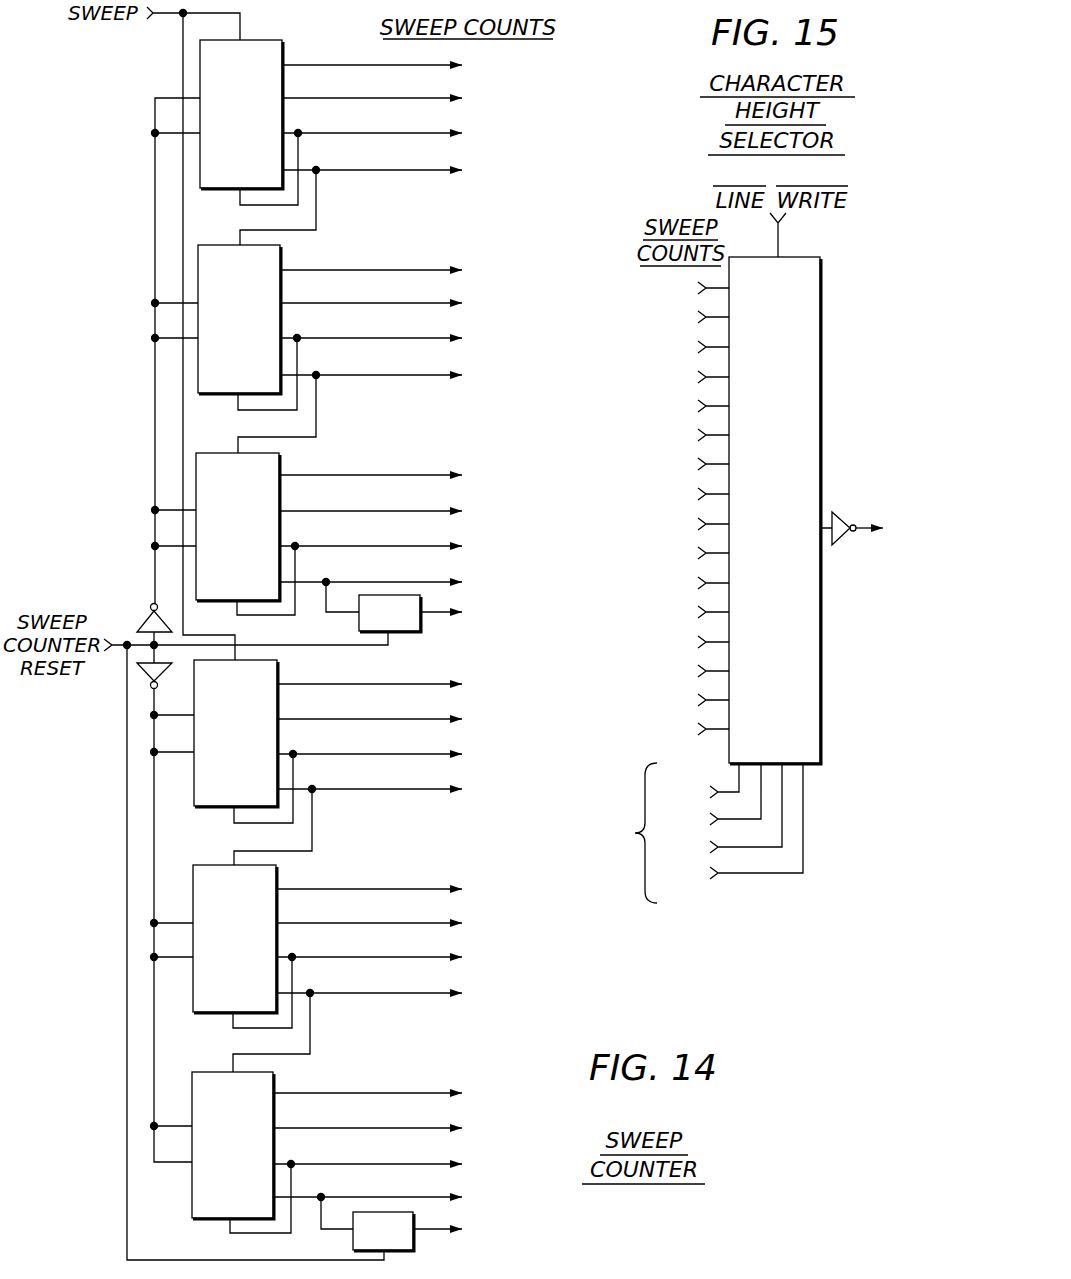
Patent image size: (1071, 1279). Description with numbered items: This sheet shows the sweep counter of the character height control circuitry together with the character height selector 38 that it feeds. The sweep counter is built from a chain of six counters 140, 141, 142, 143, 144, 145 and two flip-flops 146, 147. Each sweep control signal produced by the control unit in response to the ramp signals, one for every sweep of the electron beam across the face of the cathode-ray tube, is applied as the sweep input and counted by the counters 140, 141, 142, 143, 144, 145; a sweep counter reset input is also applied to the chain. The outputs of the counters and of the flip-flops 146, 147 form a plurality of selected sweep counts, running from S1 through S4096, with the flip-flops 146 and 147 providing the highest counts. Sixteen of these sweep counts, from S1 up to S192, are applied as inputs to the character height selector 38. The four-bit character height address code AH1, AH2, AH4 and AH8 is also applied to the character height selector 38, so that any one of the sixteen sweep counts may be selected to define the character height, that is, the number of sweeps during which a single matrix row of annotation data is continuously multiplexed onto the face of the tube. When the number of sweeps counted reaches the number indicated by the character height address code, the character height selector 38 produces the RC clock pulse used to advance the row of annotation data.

In FIG. 14, the counter 140 is at (267, 35).
In FIG. 14, the counter 141 is at (282, 255).
In FIG. 14, the counter 142 is at (281, 465).
In FIG. 14, the counter 143 is at (279, 671).
In FIG. 14, the counter 144 is at (278, 876).
In FIG. 14, the counter 145 is at (275, 1078).
In FIG. 14, the flip-flop 146 is at (421, 628).
In FIG. 14, the flip-flop 147 is at (414, 1249).
In FIG. 15, the character height selector 38 is at (821, 343).